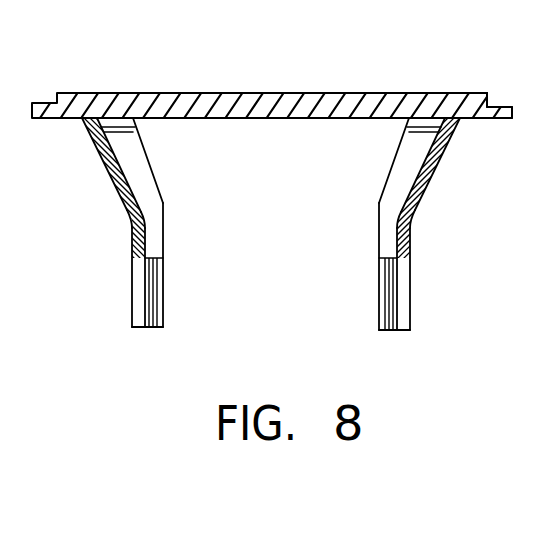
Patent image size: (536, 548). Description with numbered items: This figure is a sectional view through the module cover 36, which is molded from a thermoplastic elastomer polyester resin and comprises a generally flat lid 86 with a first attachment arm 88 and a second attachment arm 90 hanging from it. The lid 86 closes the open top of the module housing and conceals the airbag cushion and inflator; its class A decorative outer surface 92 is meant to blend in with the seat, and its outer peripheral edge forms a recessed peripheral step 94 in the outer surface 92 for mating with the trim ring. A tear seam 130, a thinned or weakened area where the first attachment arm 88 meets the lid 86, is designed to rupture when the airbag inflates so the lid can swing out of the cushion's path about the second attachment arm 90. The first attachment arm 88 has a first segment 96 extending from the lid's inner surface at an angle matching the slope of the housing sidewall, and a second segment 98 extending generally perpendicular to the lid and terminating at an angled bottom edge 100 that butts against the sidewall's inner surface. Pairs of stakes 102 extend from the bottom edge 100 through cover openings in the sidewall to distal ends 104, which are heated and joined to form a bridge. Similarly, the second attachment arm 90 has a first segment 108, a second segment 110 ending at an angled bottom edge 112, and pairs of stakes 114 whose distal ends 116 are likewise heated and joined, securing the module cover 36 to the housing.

The module cover 36 is at (174, 68).
The lid 86 is at (383, 85).
The first attachment arm 88 is at (94, 162).
The second attachment arm 90 is at (453, 167).
The outer surface 92 is at (291, 92).
The peripheral step 94 is at (491, 104).
The first segment 96 is at (143, 180).
The second segment 98 is at (157, 240).
The bottom edge 100 is at (140, 243).
The stakes 102 is at (131, 298).
The distal ends 104 is at (138, 329).
The first segment 108 is at (402, 168).
The second segment 110 is at (384, 231).
The bottom edge 112 is at (404, 251).
The stakes 114 is at (413, 309).
The distal ends 116 is at (406, 329).
The tear seam 130 is at (135, 128).